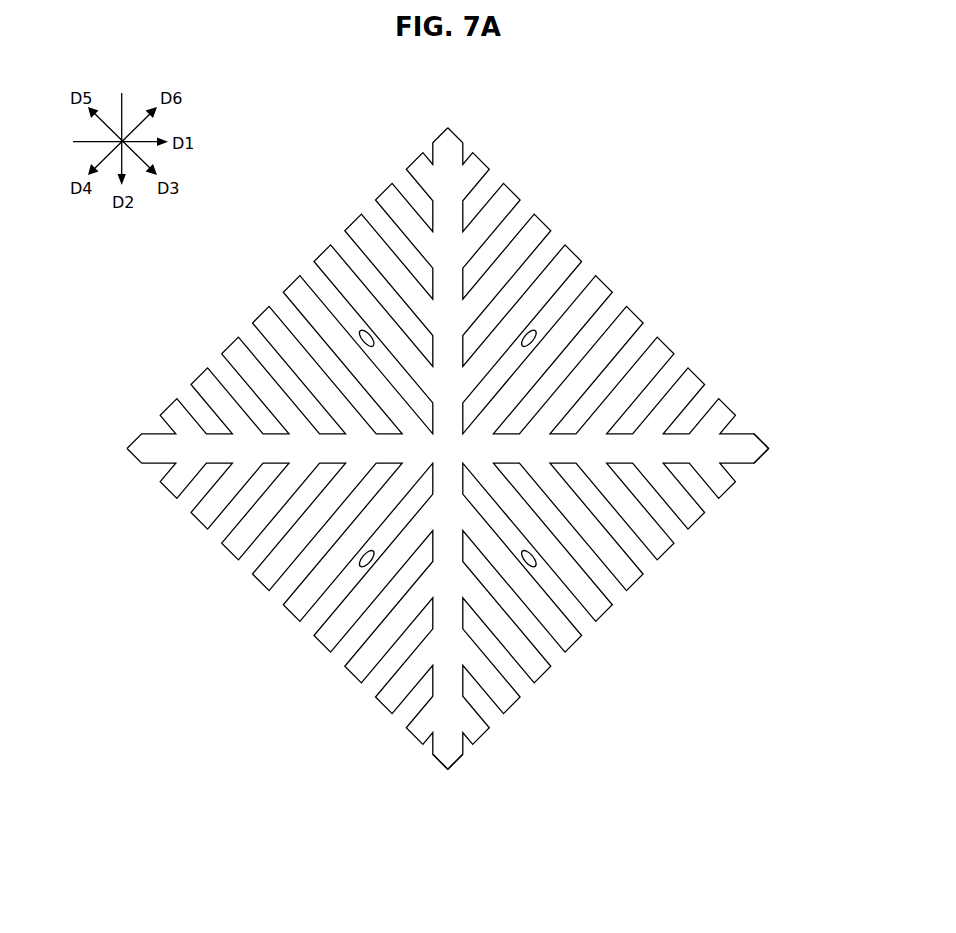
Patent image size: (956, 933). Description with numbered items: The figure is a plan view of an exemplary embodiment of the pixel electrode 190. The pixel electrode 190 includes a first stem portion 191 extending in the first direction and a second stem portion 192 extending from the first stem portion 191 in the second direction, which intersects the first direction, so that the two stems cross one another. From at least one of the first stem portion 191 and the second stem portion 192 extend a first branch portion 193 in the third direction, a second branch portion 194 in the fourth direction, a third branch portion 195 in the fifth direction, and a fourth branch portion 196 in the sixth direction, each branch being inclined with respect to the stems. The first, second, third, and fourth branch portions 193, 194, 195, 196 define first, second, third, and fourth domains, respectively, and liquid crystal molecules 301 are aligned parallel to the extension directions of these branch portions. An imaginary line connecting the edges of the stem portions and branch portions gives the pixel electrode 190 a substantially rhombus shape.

The pixel electrode 190 is at (238, 277).
The first stem portion 191 is at (770, 443).
The second stem portion 192 is at (448, 745).
The first branch portion 193 is at (631, 578).
The second branch portion 194 is at (265, 578).
The third branch portion 195 is at (233, 351).
The fourth branch portion 196 is at (662, 351).
The liquid crystal molecules 301 is at (363, 330).